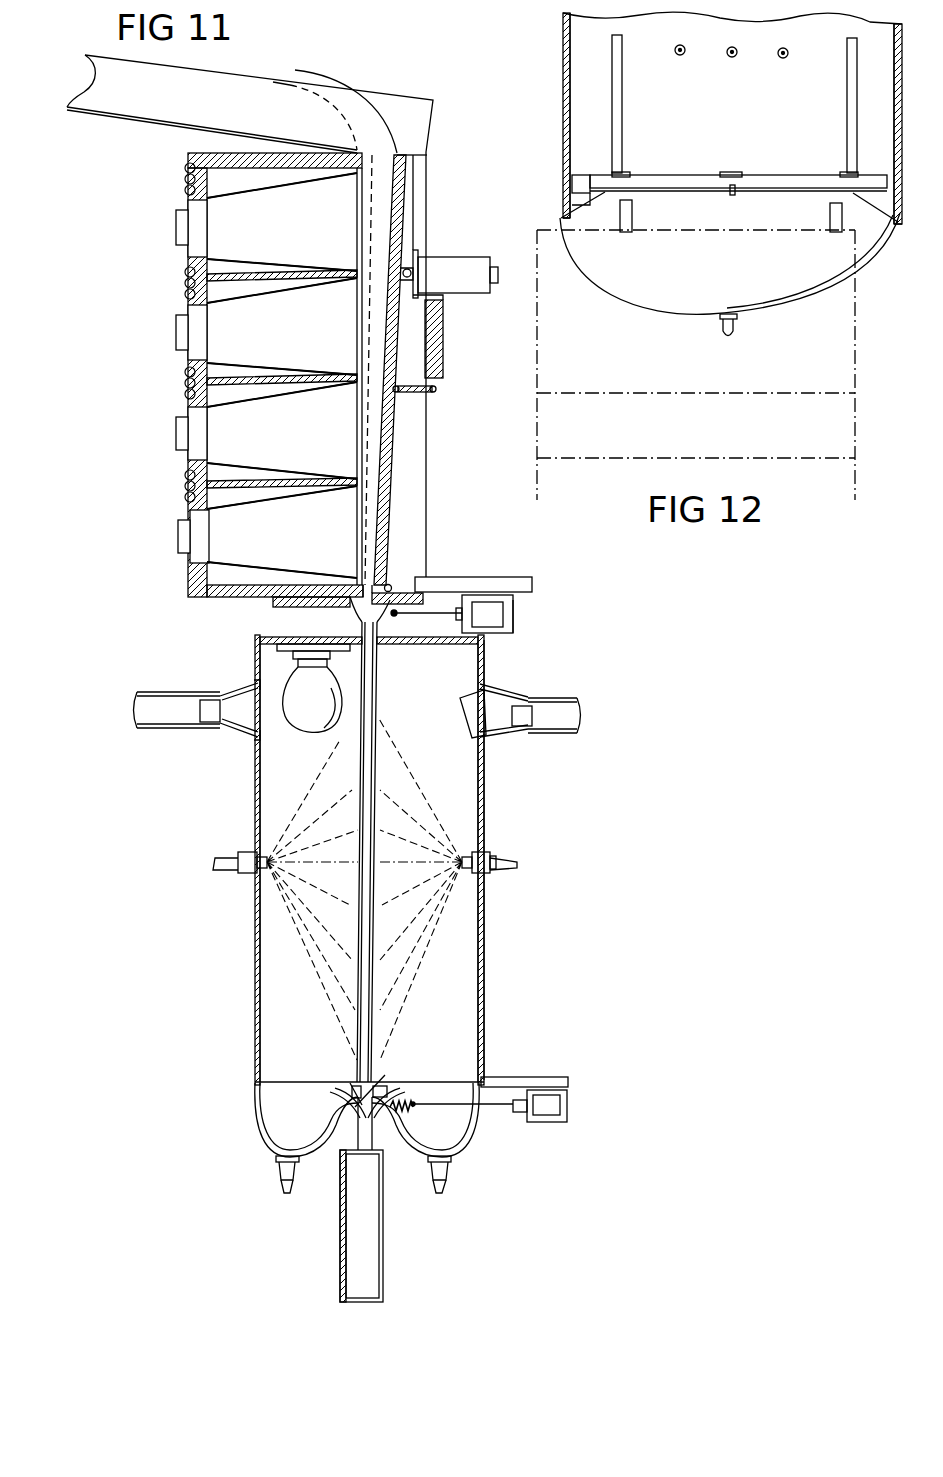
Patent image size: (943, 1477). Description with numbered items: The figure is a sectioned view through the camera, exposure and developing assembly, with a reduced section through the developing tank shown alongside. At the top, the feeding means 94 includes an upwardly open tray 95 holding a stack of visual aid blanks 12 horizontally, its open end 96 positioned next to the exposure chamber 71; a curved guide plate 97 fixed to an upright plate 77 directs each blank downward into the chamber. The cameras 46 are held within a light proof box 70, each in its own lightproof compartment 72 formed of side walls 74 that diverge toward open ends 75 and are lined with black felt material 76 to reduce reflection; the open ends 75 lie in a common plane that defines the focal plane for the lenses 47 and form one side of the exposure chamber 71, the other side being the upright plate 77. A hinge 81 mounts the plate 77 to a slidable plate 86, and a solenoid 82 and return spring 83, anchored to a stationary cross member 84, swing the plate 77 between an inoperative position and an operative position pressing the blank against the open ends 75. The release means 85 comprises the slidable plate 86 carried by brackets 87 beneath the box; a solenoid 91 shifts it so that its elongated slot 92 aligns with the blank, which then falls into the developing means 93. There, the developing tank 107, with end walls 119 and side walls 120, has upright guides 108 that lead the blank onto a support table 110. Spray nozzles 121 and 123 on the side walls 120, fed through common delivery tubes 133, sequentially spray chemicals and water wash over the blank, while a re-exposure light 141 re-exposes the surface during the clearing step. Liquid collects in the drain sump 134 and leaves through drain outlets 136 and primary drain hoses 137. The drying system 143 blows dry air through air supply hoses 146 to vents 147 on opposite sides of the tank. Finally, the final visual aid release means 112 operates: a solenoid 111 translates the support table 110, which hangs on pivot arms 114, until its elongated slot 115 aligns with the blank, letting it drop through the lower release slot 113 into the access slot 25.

In FIG. 11, the visual aid blank 12 is at (346, 795).
In FIG. 11, the access slot 25 is at (340, 1283).
In FIG. 12, the access slot 25 is at (655, 440).
In FIG. 11, the cameras 46 is at (172, 248).
In FIG. 11, the lenses 47 is at (180, 224).
In FIG. 11, the light proof box 70 is at (182, 160).
In FIG. 11, the exposure chamber 71 is at (374, 443).
In FIG. 11, the lightproof compartment 72 is at (296, 237).
In FIG. 11, the side walls 74 is at (355, 270).
In FIG. 11, the open ends 75 is at (323, 190).
In FIG. 11, the black felt material 76 is at (223, 195).
In FIG. 11, the upright plate 77 is at (398, 490).
In FIG. 11, the hinge 81 is at (398, 582).
In FIG. 11, the solenoid 82 is at (450, 257).
In FIG. 11, the return spring 83 is at (425, 400).
In FIG. 11, the cross member 84 is at (444, 335).
In FIG. 11, the release means 85 is at (522, 607).
In FIG. 11, the slidable plate 86 is at (413, 592).
In FIG. 11, the brackets 87 is at (386, 616).
In FIG. 11, the solenoid 91 is at (507, 633).
In FIG. 11, the elongated slot 92 is at (350, 607).
In FIG. 12, the elongated slot 92 is at (558, 110).
In FIG. 11, the developing means 93 is at (487, 800).
In FIG. 11, the feeding means 94 is at (80, 83).
In FIG. 11, the tray 95 is at (173, 113).
In FIG. 11, the open end 96 is at (358, 105).
In FIG. 11, the curved guide plate 97 is at (298, 72).
In FIG. 11, the developing tank 107 is at (487, 943).
In FIG. 12, the developing tank 107 is at (578, 133).
In FIG. 11, the upright guides 108 is at (373, 660).
In FIG. 12, the upright guides 108 is at (622, 98).
In FIG. 11, the support table 110 is at (383, 1082).
In FIG. 12, the support table 110 is at (724, 162).
In FIG. 11, the solenoid 111 is at (553, 1122).
In FIG. 11, the final visual aid release means 112 is at (310, 1093).
In FIG. 11, the lower release slot 113 is at (380, 1110).
In FIG. 11, the pivot arms 114 is at (350, 1082).
In FIG. 12, the pivot arms 114 is at (572, 188).
In FIG. 11, the elongated slot 115 is at (345, 1098).
In FIG. 11, the end walls 119 is at (306, 805).
In FIG. 12, the end walls 119 is at (562, 72).
In FIG. 11, the side walls 120 is at (254, 950).
In FIG. 12, the side walls 120 is at (758, 118).
In FIG. 11, the spray nozzles 121 is at (250, 873).
In FIG. 12, the spray nozzles 121 is at (783, 59).
In FIG. 11, the spray nozzles 123 is at (490, 856).
In FIG. 11, the common delivery tubes 133 is at (220, 866).
In FIG. 11, the drain sump 134 is at (270, 1150).
In FIG. 12, the drain sump 134 is at (690, 315).
In FIG. 11, the drain outlets 136 is at (277, 1170).
In FIG. 12, the drain outlets 136 is at (720, 325).
In FIG. 11, the primary drain hoses 137 is at (289, 1195).
In FIG. 11, the re-exposure light 141 is at (297, 733).
In FIG. 11, the drying system 143 is at (183, 735).
In FIG. 11, the air supply hoses 146 is at (147, 715).
In FIG. 11, the vents 147 is at (238, 692).